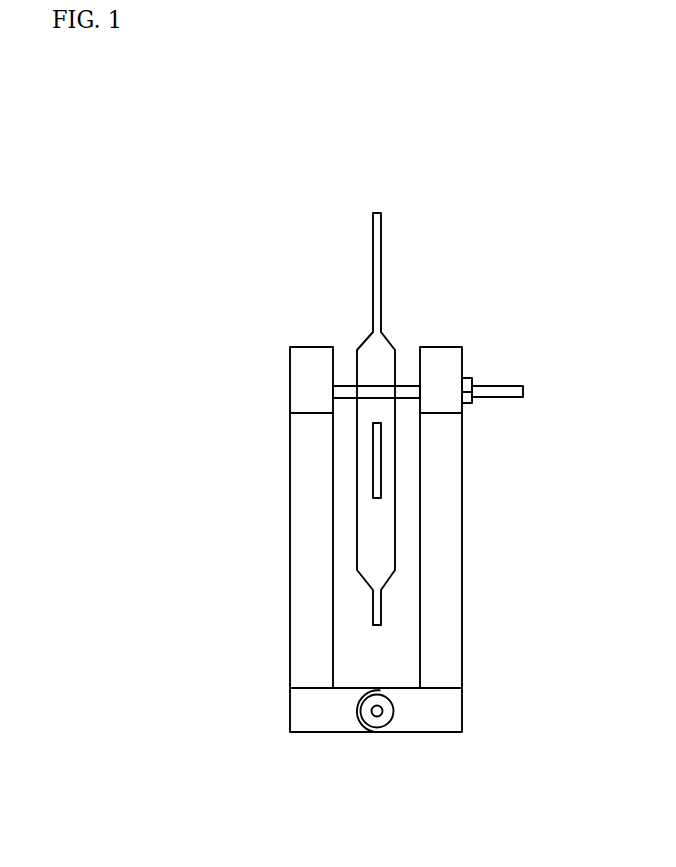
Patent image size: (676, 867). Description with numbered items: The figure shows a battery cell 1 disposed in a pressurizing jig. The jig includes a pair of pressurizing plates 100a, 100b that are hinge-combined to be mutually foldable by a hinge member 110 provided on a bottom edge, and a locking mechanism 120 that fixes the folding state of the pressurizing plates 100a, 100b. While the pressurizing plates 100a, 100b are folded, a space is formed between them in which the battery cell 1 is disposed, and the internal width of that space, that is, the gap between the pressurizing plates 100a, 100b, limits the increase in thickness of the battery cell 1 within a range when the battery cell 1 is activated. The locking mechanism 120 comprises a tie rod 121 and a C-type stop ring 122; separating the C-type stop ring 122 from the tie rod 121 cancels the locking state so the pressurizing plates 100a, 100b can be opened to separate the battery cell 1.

The battery cell 1 is at (410, 458).
The pressurizing plate 100a is at (295, 515).
The pressurizing plate 100b is at (450, 565).
The hinge member 110 is at (372, 751).
The locking mechanism 120 is at (503, 332).
The tie rod 121 is at (512, 388).
The C-type stop ring 122 is at (467, 377).